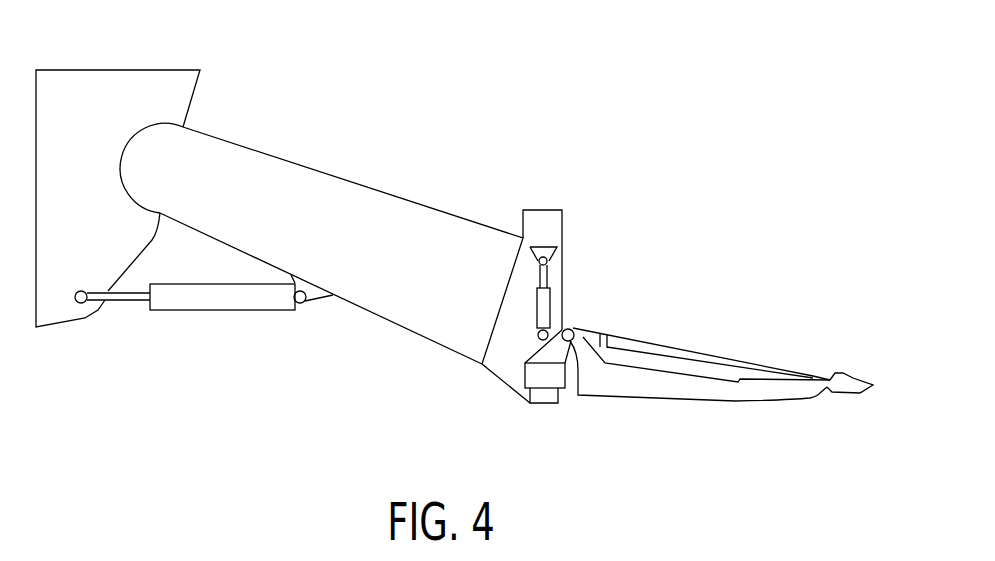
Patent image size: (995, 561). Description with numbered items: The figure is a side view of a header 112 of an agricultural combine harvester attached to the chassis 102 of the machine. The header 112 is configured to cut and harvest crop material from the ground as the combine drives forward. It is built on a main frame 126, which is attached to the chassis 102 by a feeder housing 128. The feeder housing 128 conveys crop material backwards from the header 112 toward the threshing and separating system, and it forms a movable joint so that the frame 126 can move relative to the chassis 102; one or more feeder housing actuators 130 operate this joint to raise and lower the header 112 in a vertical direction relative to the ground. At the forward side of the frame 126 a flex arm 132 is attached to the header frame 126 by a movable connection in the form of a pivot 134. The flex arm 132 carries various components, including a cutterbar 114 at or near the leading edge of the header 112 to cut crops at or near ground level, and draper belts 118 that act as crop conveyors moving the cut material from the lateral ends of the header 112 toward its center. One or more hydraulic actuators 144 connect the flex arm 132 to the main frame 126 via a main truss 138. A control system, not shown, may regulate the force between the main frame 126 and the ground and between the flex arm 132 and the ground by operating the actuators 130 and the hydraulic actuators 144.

The chassis 102 is at (108, 82).
The header 112 is at (588, 93).
The feeder housing 128 is at (308, 177).
The feeder housing actuator 130 is at (212, 302).
The frame 126 is at (563, 238).
The hydraulic actuator 144 is at (537, 308).
The pivot 134 is at (575, 327).
The draper belt 118 is at (702, 355).
The flex arm 132 is at (635, 387).
The main truss 138 is at (548, 377).
The cutterbar 114 is at (857, 378).